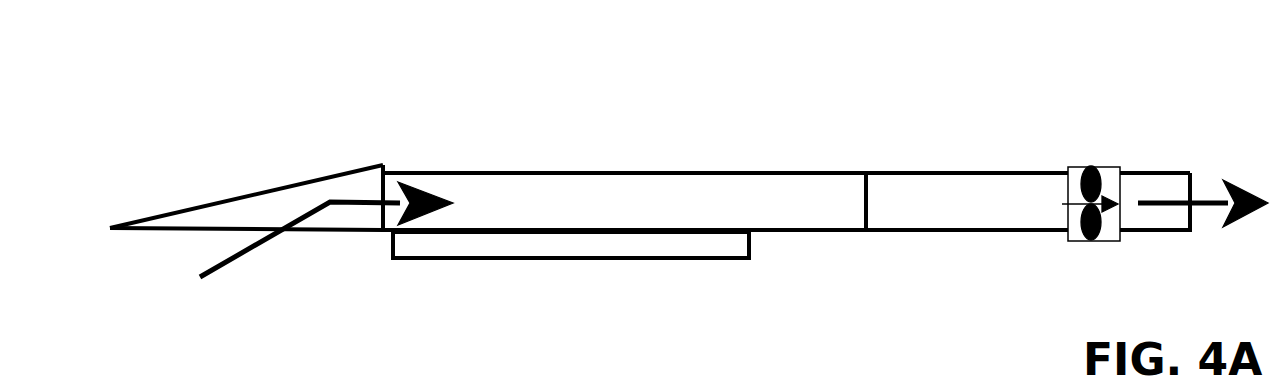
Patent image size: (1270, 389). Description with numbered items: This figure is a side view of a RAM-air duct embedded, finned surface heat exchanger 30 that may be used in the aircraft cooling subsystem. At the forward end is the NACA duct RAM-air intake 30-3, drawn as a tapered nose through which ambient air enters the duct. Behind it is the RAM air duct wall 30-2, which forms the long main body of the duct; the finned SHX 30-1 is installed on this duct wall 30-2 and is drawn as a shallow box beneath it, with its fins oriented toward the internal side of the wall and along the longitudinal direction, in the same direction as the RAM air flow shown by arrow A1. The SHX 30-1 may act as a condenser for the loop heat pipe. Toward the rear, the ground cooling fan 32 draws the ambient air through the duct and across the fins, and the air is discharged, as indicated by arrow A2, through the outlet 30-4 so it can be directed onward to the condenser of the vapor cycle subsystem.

The RAM-air duct embedded, finned SHX 30 is at (921, 88).
The finned SHX 30-1 is at (575, 248).
The RAM air duct wall 30-2 is at (611, 207).
The NACA duct RAM-air intake 30-3 is at (232, 221).
The outlet 30-4 is at (1150, 182).
The ground cooling fan 32 is at (1082, 177).
The RAM air flow A1 is at (348, 190).
The discharge flow A2 is at (1172, 190).